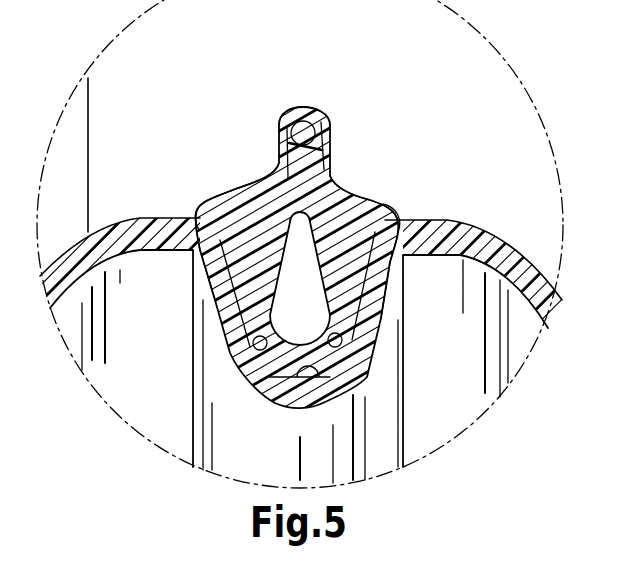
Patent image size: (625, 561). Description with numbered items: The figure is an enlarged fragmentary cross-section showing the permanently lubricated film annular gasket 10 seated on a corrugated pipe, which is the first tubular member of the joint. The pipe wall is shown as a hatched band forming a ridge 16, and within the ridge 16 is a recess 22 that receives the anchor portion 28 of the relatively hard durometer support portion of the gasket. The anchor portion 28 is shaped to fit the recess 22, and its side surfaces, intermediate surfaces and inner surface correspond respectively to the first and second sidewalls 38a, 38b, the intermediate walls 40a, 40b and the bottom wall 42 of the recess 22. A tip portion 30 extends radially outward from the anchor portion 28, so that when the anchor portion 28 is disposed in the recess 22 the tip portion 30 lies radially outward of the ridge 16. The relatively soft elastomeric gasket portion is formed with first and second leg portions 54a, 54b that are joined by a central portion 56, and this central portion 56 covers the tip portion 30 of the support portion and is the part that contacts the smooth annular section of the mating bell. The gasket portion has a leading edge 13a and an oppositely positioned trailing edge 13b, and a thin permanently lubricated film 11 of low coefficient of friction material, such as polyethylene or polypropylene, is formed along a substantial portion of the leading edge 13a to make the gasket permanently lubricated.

The permanently lubricated film annular gasket 10 is at (298, 259).
The permanently lubricated film 11 is at (265, 181).
The leading edge 13a is at (196, 140).
The trailing edge 13b is at (360, 146).
The ridge 16 is at (163, 230).
The recess 22 is at (447, 228).
The anchor portion 28 is at (215, 308).
The tip portion 30 is at (329, 146).
The first sidewall 38a is at (251, 269).
The second sidewall 38b is at (356, 313).
The first intermediate wall 40a is at (256, 348).
The second intermediate wall 40b is at (336, 356).
The bottom wall 42 is at (288, 400).
The first leg portion 54a is at (230, 200).
The second leg portion 54b is at (377, 207).
The central portion 56 is at (303, 113).